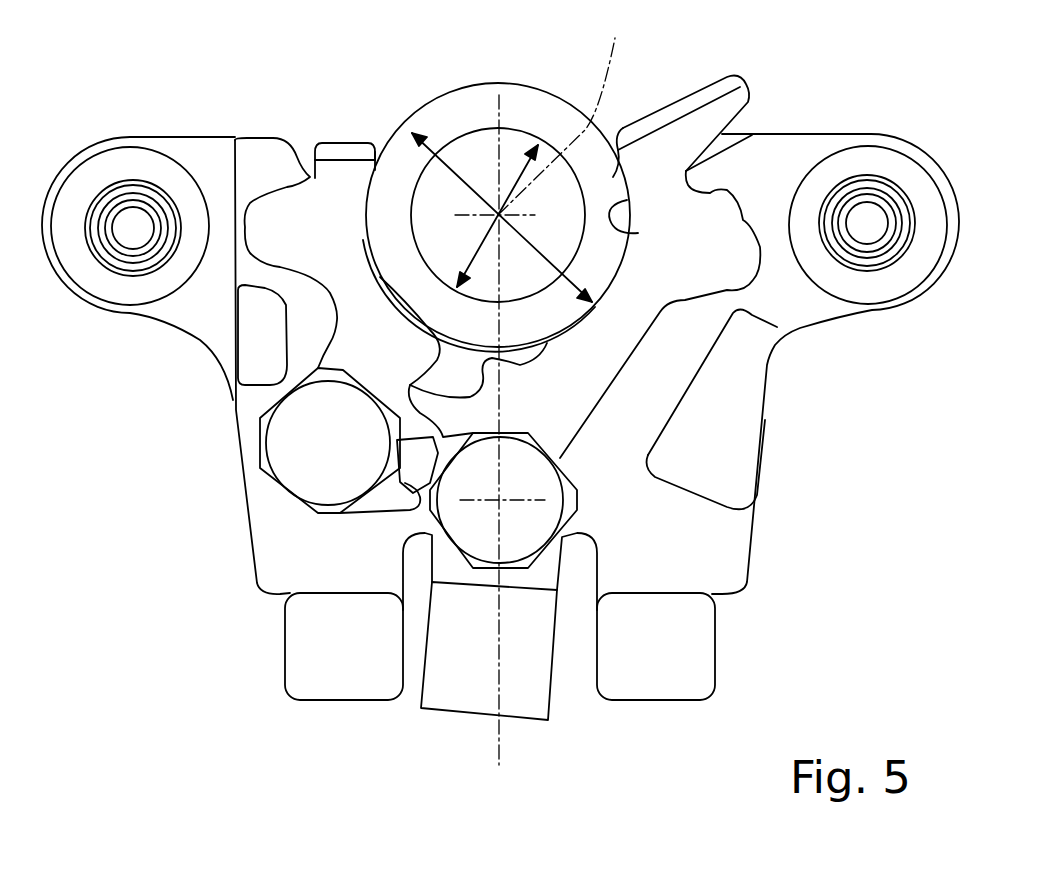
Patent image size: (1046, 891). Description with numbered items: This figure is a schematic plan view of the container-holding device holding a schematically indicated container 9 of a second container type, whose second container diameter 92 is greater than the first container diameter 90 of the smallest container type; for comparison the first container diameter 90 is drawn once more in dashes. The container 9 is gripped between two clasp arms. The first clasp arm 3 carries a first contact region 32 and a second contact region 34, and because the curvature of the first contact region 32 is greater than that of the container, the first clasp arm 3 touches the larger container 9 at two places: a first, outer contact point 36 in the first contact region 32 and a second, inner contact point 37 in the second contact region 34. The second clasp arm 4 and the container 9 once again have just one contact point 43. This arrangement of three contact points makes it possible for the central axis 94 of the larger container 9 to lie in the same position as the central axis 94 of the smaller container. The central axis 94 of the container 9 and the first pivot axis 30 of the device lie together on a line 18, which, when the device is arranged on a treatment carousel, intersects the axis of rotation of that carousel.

The first clasp arm 3 is at (740, 94).
The second clasp arm 4 is at (337, 295).
The container 9 is at (552, 88).
The line 18 is at (505, 762).
The first pivot axis 30 is at (498, 502).
The first contact region 32 is at (752, 135).
The second contact region 34 is at (593, 263).
The first, outer contact point 36 is at (667, 150).
The second, inner contact point 37 is at (565, 290).
The contact point 43 is at (367, 237).
The first container diameter 90 is at (520, 165).
The second container diameter 92 is at (433, 147).
The central axis 94 is at (566, 111).